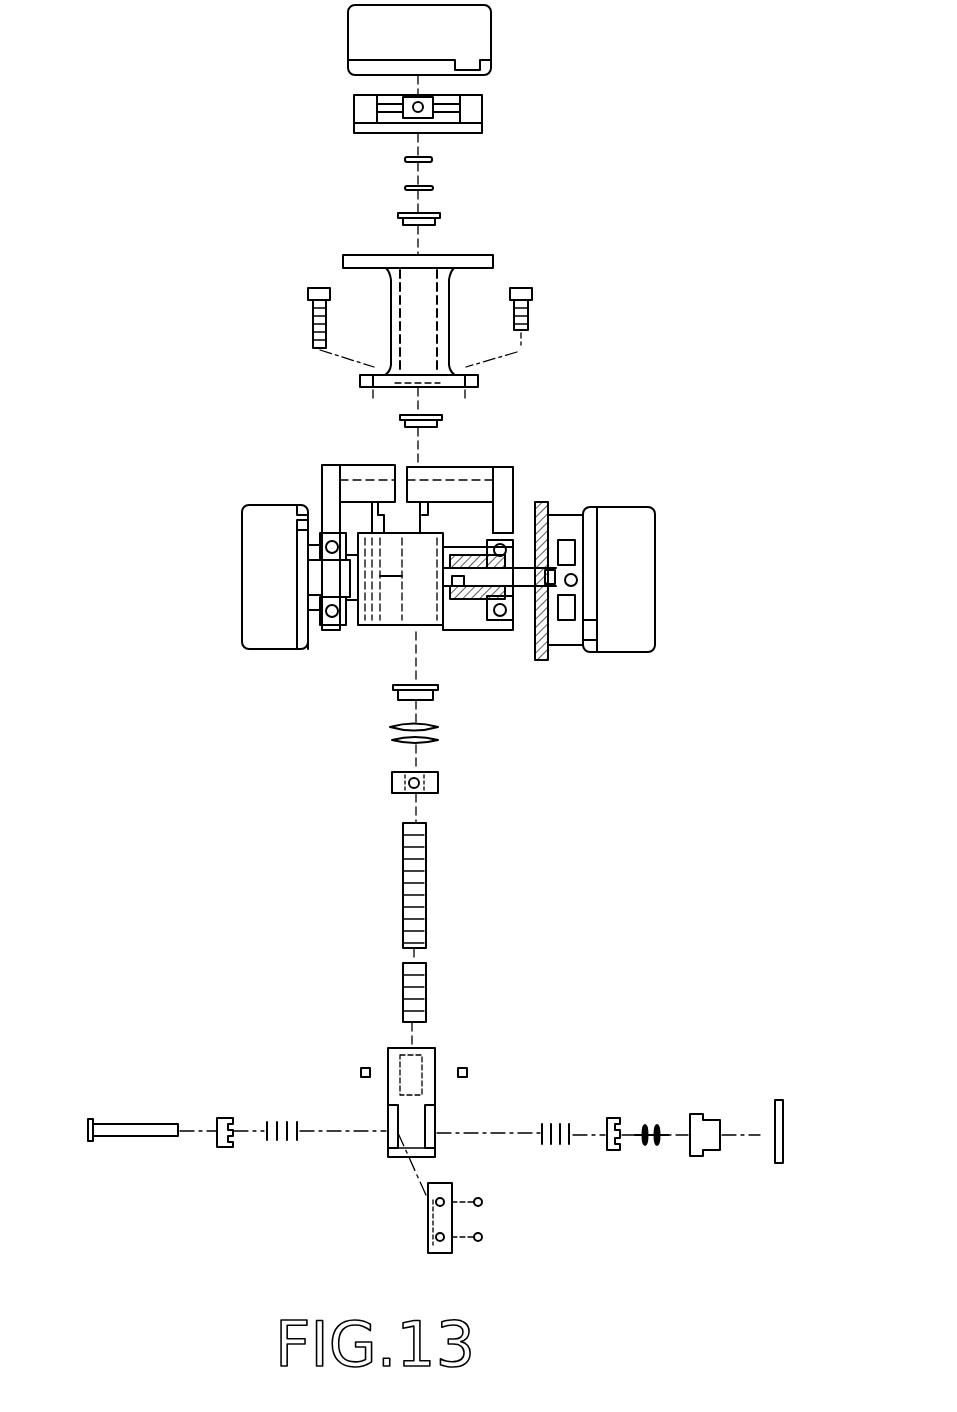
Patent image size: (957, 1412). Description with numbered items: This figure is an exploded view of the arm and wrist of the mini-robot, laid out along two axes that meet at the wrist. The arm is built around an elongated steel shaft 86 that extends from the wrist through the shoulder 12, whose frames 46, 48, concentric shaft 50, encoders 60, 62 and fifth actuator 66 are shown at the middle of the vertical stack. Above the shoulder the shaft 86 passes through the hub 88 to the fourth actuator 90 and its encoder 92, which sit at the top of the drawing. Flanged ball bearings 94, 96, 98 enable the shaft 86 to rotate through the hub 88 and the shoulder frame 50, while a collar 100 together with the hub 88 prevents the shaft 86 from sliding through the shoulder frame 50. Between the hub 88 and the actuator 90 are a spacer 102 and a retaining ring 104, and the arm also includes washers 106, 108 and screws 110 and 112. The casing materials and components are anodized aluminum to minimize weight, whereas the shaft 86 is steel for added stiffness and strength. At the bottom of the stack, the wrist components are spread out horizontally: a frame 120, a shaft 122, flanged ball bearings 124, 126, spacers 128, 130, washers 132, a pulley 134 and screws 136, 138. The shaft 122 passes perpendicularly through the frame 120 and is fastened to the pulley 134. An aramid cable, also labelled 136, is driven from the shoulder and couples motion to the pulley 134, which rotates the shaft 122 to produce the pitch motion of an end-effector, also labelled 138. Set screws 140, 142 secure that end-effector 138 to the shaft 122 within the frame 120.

The shoulder 12 is at (604, 470).
The frame 46 is at (322, 475).
The frame 48 is at (513, 470).
The concentric shaft 50 is at (428, 628).
The encoder 60 is at (242, 562).
The encoder 62 is at (655, 574).
The fifth actuator 66 is at (566, 647).
The elongated steel shaft 86 is at (403, 870).
The hub 88 is at (343, 260).
The fourth actuator 90 is at (354, 107).
The encoder 92 is at (348, 30).
The flanged ball bearing 94 is at (430, 213).
The flanged ball bearing 96 is at (442, 418).
The flanged ball bearing 98 is at (438, 693).
The collar 100 is at (438, 786).
The spacer 102 is at (405, 188).
The retaining ring 104 is at (405, 160).
The washer 106 is at (396, 726).
The washer 108 is at (396, 740).
The screw 110 is at (313, 316).
The screw 112 is at (532, 308).
The frame 120 is at (435, 1103).
The shaft 122 is at (130, 1122).
The flanged ball bearing 124 is at (224, 1118).
The flanged ball bearing 126 is at (619, 1125).
The spacer 128 is at (285, 1115).
The spacer 130 is at (556, 1105).
The washers 132 is at (645, 1160).
The pulley 134 is at (710, 1156).
The screw 136 is at (365, 1067).
The screw 138 is at (463, 1067).
The set screw 140 is at (482, 1204).
The set screw 142 is at (481, 1240).